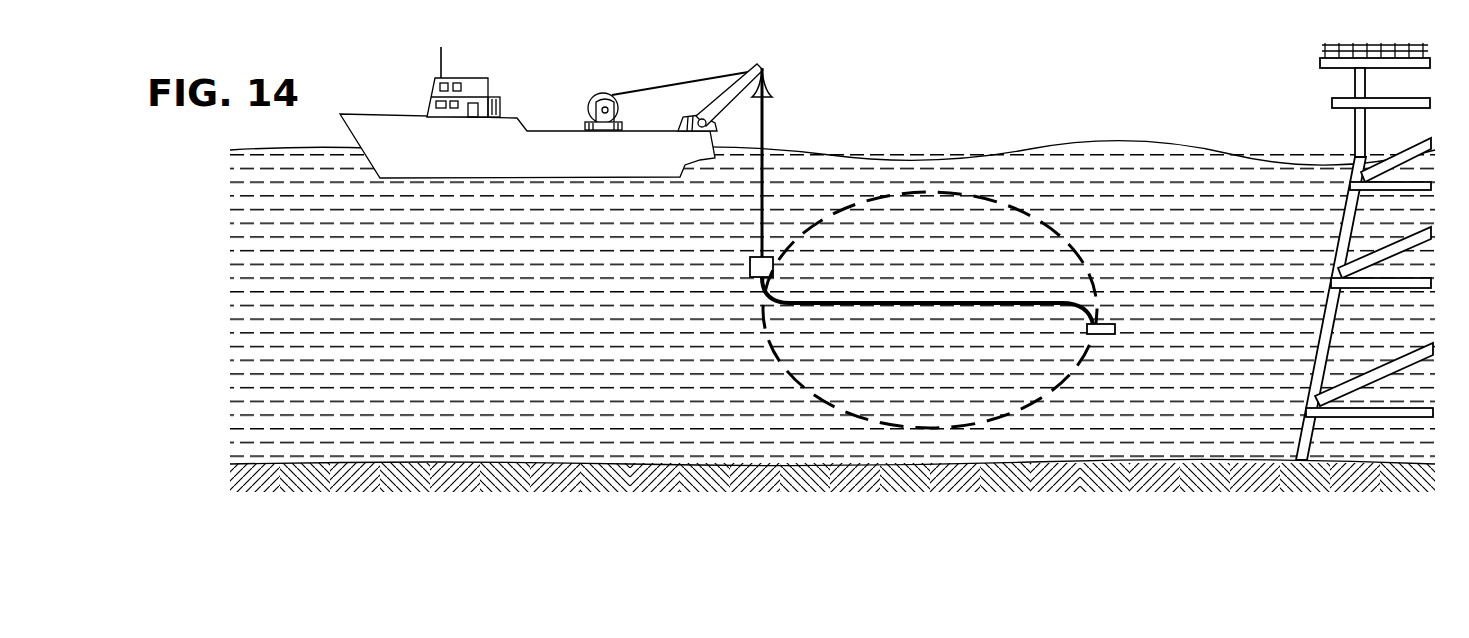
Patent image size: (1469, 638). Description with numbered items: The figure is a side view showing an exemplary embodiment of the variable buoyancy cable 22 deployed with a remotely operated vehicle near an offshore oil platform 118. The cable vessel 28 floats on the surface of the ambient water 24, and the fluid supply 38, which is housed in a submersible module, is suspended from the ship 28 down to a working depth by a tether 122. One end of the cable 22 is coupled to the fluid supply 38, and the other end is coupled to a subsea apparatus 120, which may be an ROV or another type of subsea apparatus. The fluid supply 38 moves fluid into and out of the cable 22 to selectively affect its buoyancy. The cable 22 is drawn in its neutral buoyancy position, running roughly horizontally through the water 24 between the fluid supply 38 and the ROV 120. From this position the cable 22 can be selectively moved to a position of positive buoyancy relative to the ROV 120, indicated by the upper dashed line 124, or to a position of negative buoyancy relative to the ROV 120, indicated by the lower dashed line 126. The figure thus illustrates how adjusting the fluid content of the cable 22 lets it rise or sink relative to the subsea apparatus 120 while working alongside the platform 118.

The variable buoyancy cable 22 is at (998, 303).
The ambient water 24 is at (1147, 180).
The cable vessel 28 is at (387, 123).
The fluid supply 38 is at (768, 262).
The offshore oil platform 118 is at (1358, 135).
The subsea apparatus 120 is at (1105, 335).
The tether 122 is at (765, 128).
The dashed line 124 is at (926, 188).
The dashed line 126 is at (877, 430).